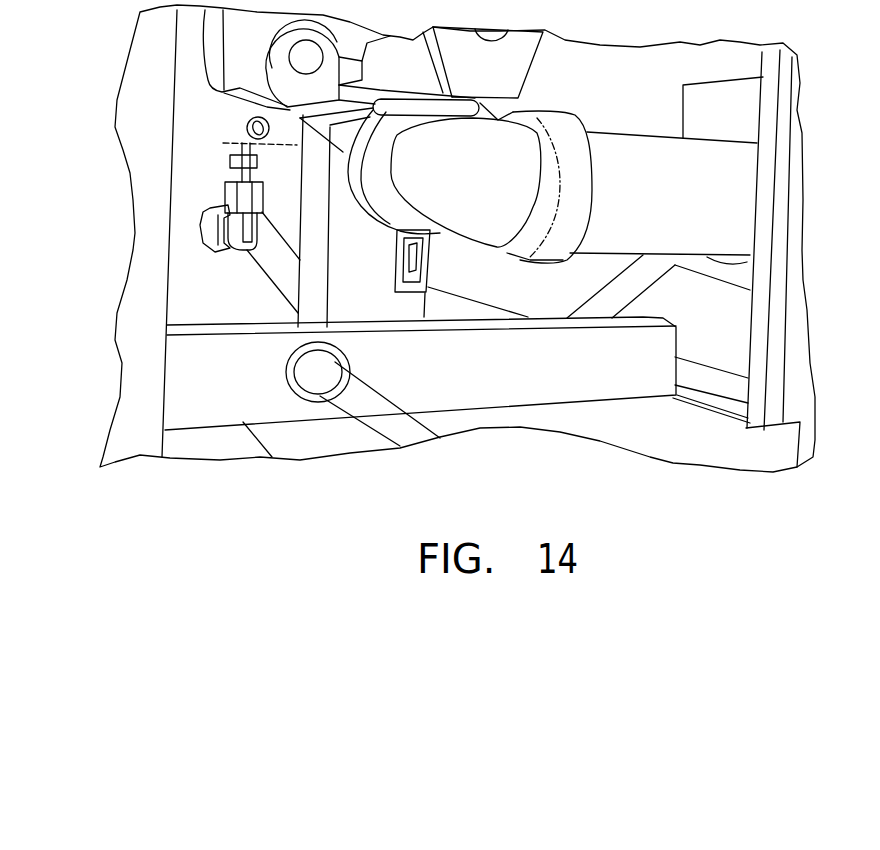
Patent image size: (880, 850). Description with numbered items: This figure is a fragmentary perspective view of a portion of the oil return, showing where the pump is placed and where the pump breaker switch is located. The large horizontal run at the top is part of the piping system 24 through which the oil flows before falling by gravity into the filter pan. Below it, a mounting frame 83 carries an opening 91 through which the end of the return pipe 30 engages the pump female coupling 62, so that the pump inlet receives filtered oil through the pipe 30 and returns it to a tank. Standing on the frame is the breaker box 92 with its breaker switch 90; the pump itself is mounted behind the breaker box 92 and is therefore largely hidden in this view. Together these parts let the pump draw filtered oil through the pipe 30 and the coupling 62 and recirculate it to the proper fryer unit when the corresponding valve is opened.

The piping system 24 is at (637, 138).
The return pipe 30 is at (388, 394).
The pump female coupling 62 is at (351, 348).
The mounting frame 83 is at (228, 328).
The breaker switch 90 is at (395, 267).
The opening 91 is at (290, 363).
The breaker box 92 is at (312, 178).